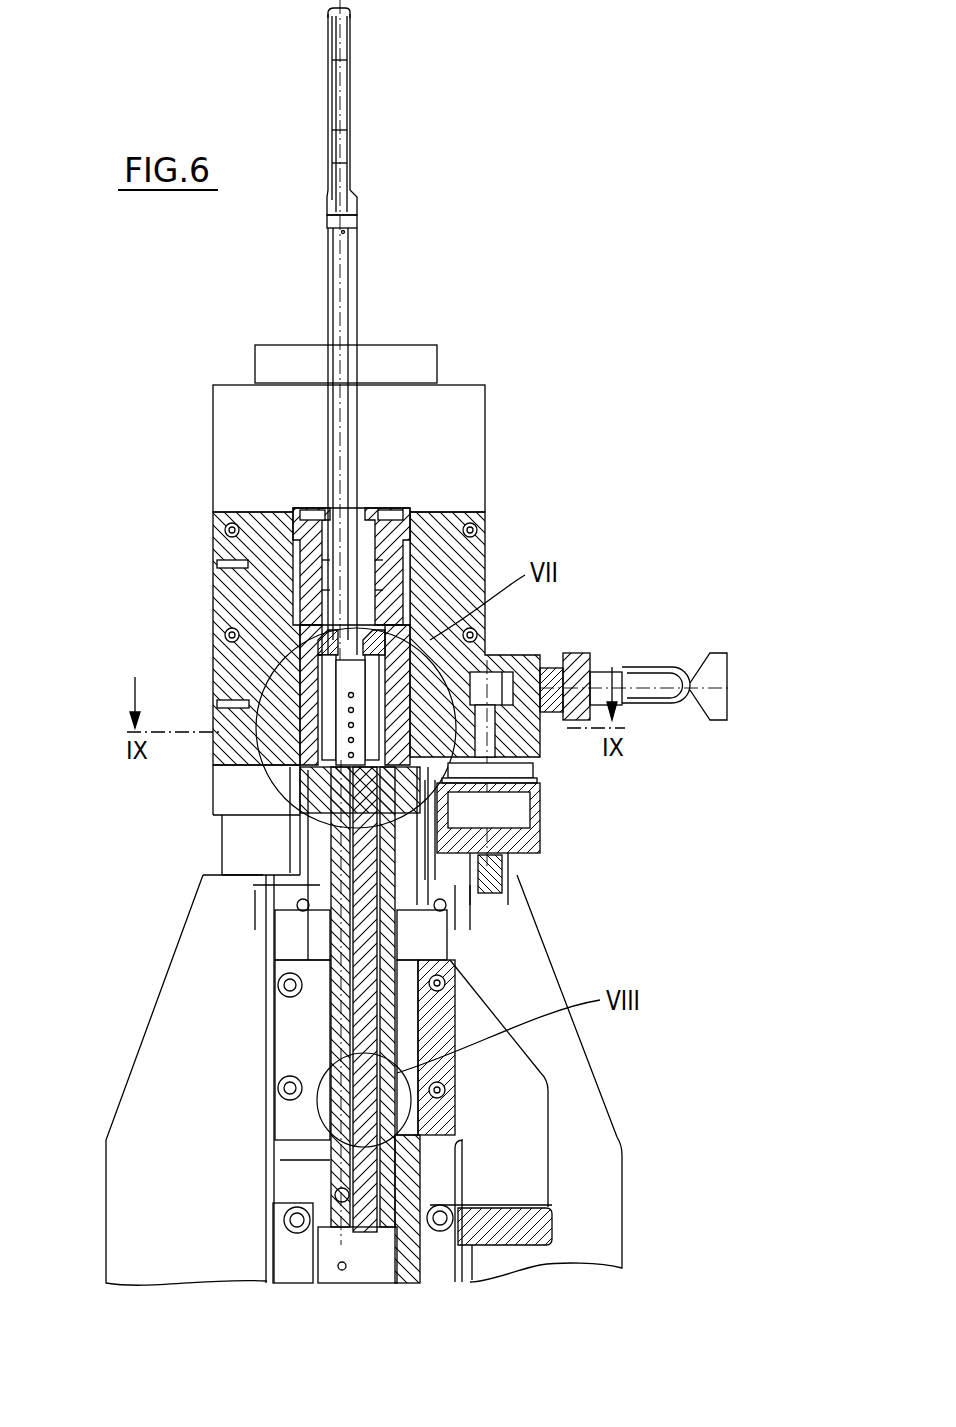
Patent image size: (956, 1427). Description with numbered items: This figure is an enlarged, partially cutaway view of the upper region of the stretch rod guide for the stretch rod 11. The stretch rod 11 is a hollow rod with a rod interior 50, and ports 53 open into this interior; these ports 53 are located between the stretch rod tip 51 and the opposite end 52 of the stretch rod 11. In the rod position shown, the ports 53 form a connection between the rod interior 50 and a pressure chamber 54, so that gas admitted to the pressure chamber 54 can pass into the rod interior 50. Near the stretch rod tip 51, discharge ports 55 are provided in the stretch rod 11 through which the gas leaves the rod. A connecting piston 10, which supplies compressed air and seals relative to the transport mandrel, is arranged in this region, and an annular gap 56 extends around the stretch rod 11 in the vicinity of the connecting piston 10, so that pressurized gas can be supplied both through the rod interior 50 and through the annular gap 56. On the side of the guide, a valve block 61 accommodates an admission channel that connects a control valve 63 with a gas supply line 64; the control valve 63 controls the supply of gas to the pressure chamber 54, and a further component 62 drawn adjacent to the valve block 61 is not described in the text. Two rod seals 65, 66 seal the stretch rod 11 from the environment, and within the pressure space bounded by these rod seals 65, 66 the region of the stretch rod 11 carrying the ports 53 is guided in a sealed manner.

The connecting piston 10 is at (437, 510).
The stretch rod 11 is at (360, 295).
The rod interior 50 is at (352, 435).
The stretch rod tip 51 is at (346, 10).
The opposite end 52 is at (353, 1213).
The ports 53 is at (330, 737).
The pressure chamber 54 is at (270, 690).
The discharge ports 55 is at (342, 72).
The annular gap 56 is at (368, 498).
The valve block 61 is at (488, 738).
The flange 62 is at (535, 735).
The control valve 63 is at (540, 800).
The gas supply line 64 is at (618, 680).
The rod seal 65 is at (290, 632).
The rod seal 66 is at (330, 1073).